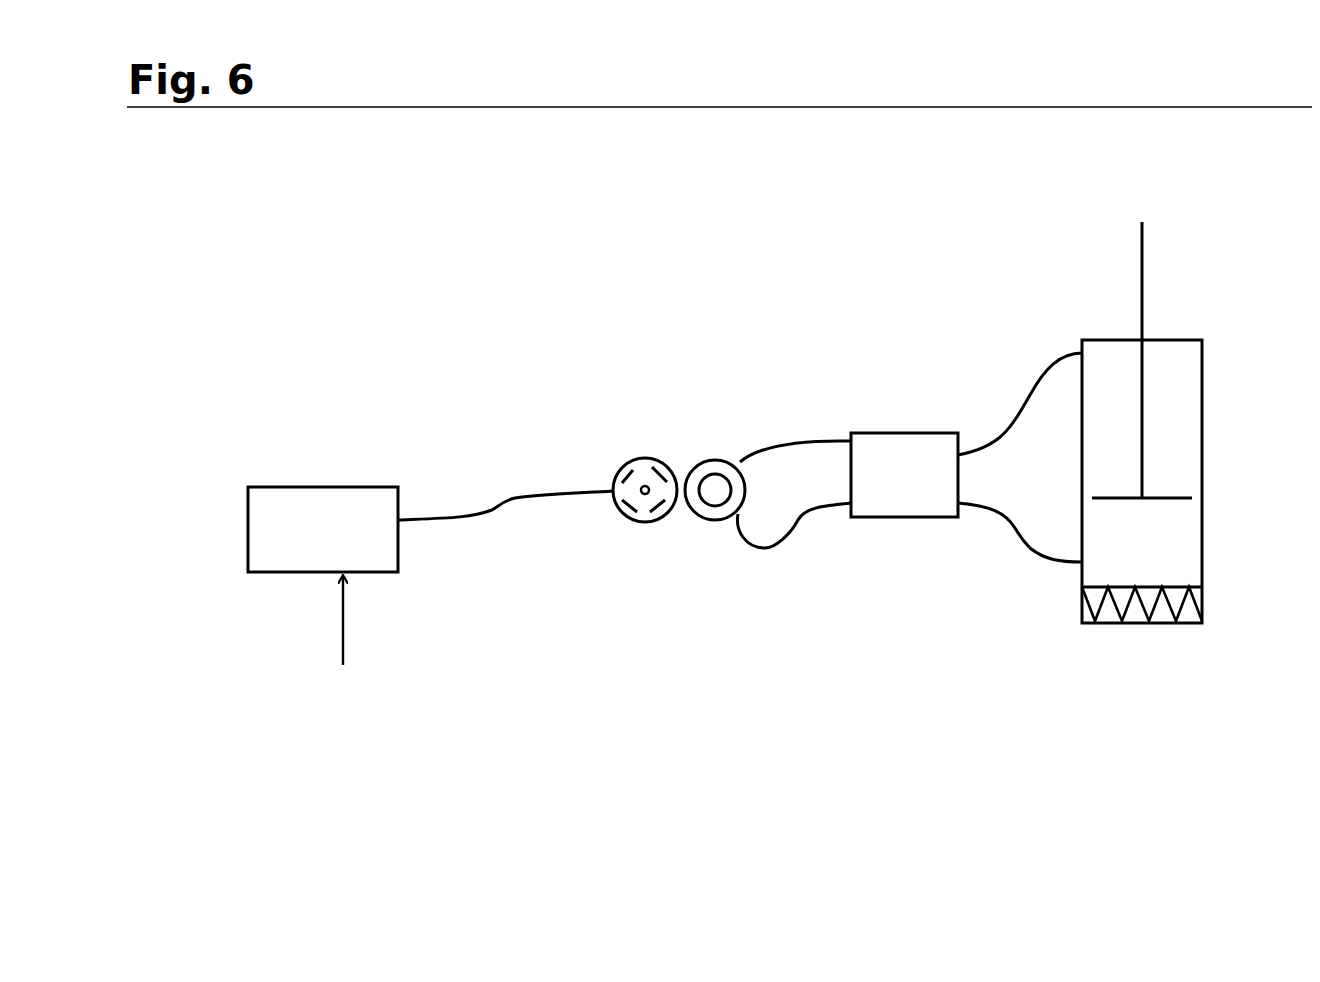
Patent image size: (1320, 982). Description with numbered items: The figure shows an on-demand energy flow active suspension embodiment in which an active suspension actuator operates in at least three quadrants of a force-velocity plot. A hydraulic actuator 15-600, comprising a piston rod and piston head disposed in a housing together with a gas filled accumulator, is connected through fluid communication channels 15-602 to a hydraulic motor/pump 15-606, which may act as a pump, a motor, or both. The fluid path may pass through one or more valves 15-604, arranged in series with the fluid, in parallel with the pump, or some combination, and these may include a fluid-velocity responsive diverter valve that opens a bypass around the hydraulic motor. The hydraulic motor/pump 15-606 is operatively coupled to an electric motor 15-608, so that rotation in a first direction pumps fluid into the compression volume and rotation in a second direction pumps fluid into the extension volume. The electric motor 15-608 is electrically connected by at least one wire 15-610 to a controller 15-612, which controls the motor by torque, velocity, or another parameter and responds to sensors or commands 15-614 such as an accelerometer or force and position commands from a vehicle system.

The hydraulic actuator 15-600 is at (1188, 645).
The fluid communication channels 15-602 is at (985, 542).
The valves 15-604 is at (932, 422).
The hydraulic motor/pump 15-606 is at (714, 528).
The electric motor 15-608 is at (655, 452).
The wire 15-610 is at (478, 488).
The controller 15-612 is at (306, 478).
The sensors or commands 15-614 is at (418, 694).